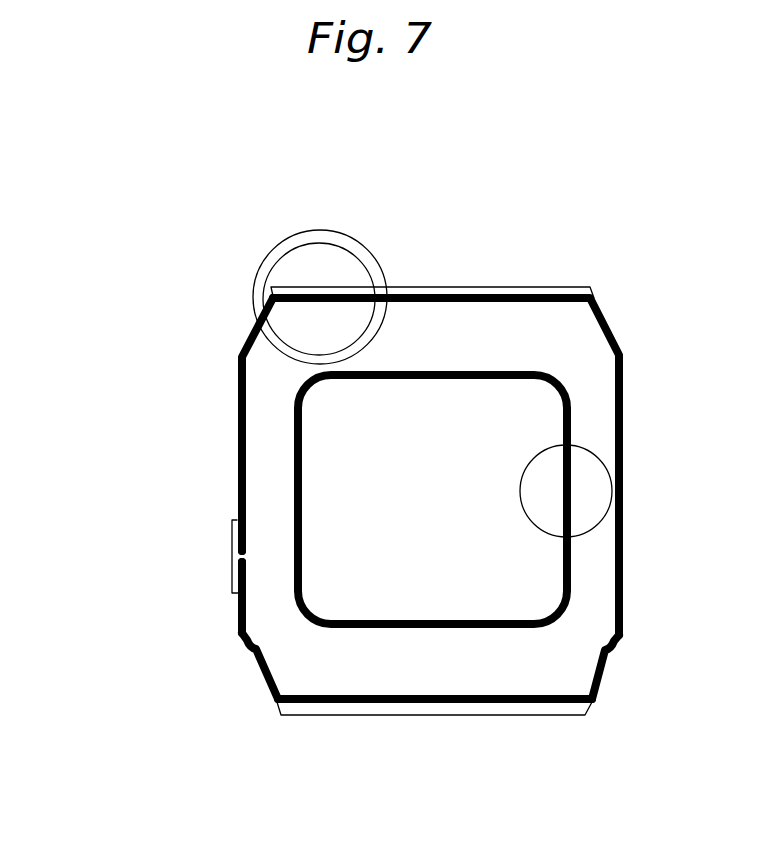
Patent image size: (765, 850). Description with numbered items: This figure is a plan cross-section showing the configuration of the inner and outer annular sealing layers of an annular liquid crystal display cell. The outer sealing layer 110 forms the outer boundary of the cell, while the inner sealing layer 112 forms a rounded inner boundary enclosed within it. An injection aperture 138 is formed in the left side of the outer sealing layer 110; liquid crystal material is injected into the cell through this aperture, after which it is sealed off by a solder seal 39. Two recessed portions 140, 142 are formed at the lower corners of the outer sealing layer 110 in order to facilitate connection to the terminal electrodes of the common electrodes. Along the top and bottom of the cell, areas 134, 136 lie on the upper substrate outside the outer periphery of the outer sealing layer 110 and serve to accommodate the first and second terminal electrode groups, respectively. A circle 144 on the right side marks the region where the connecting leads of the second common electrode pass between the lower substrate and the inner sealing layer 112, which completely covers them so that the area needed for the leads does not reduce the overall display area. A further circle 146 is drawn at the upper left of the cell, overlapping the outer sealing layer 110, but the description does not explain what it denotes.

The outer sealing layer 110 is at (238, 435).
The inner sealing layer 112 is at (302, 500).
The area 134 is at (432, 716).
The area 136 is at (452, 287).
The injection aperture 138 is at (245, 556).
The solder seal 39 is at (232, 538).
The recessed portion 140 is at (250, 647).
The recessed portion 142 is at (611, 648).
The circle 144 is at (612, 478).
The circular opening area 146 is at (305, 231).